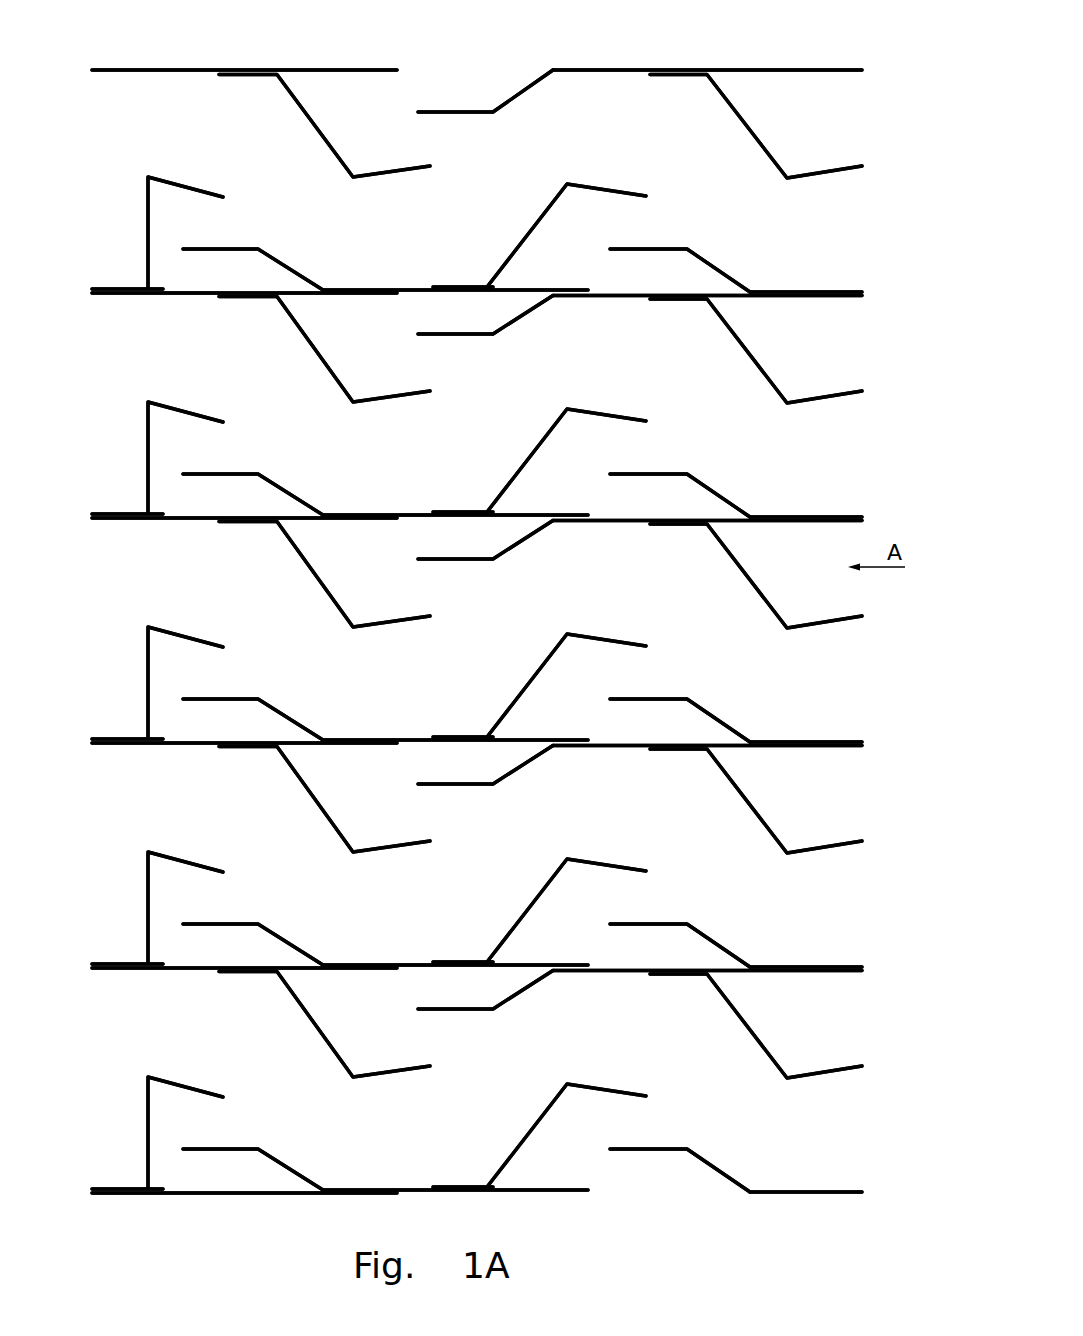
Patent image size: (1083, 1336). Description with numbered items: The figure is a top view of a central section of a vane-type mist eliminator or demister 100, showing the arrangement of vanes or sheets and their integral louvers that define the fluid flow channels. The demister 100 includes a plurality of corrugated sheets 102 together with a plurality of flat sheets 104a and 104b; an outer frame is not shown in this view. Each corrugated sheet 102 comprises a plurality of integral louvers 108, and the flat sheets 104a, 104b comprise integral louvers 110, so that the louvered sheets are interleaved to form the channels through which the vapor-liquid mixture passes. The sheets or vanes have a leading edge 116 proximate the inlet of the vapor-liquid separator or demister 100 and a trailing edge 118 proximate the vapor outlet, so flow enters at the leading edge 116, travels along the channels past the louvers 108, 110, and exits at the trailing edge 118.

The mist eliminator 100 is at (454, 621).
The corrugated sheet 102 is at (121, 196).
The flat sheet 104a is at (140, 68).
The flat sheet 104b is at (825, 290).
The integral louver 108 is at (190, 184).
The integral louver 110 is at (458, 111).
The leading edge 116 is at (863, 970).
The trailing edge 118 is at (90, 742).